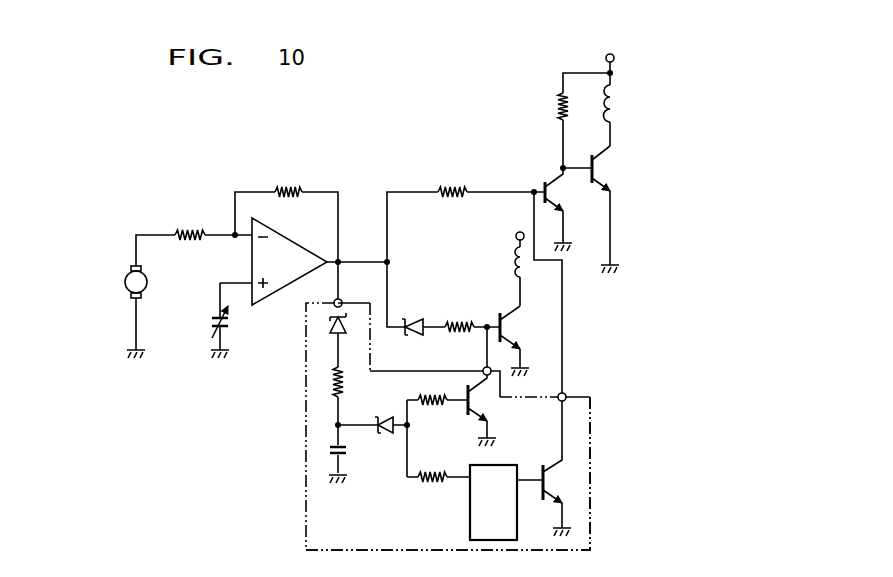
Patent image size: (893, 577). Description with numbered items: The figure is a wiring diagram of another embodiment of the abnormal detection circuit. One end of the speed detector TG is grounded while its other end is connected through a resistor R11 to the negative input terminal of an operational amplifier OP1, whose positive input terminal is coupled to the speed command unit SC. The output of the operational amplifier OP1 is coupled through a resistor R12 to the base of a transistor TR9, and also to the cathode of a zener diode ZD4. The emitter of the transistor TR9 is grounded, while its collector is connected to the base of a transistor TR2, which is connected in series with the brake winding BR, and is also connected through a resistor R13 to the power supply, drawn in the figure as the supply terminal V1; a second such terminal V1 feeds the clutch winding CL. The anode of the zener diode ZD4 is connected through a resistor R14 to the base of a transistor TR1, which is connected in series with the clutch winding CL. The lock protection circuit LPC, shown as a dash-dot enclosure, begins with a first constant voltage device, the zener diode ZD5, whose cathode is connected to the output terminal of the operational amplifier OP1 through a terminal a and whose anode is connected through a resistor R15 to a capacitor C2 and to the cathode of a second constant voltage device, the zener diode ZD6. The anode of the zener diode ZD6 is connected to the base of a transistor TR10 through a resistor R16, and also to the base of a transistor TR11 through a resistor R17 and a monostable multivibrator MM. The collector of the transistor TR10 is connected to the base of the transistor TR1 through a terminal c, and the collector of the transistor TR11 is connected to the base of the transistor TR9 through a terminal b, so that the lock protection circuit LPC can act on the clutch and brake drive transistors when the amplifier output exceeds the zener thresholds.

The speed detector TG is at (125, 282).
The resistor R11 is at (189, 231).
The speed command unit SC is at (213, 322).
The operational amplifier OP1 is at (303, 247).
The terminal a is at (341, 300).
The first constant voltage device (zener diode) ZD5 is at (330, 318).
The resistor R15 is at (333, 383).
The capacitor C2 is at (328, 450).
The second constant voltage device (zener diode) ZD6 is at (385, 435).
The resistor R16 is at (431, 405).
The resistor R17 is at (431, 483).
The monostable multivibrator MM is at (493, 502).
The transistor TR10 is at (475, 406).
The terminal c is at (484, 368).
The zener diode ZD4 is at (413, 316).
The resistor R14 is at (463, 317).
The transistor TR1 is at (508, 331).
The clutch winding CL is at (512, 265).
The power supply terminal V1 is at (562, 134).
The resistor R12 is at (453, 186).
The transistor TR9 is at (549, 200).
The resistor R13 is at (558, 103).
The brake winding BR is at (613, 103).
The transistor TR2 is at (600, 167).
The terminal b is at (565, 394).
The transistor TR11 is at (566, 486).
The lock protection circuit LPC is at (592, 526).